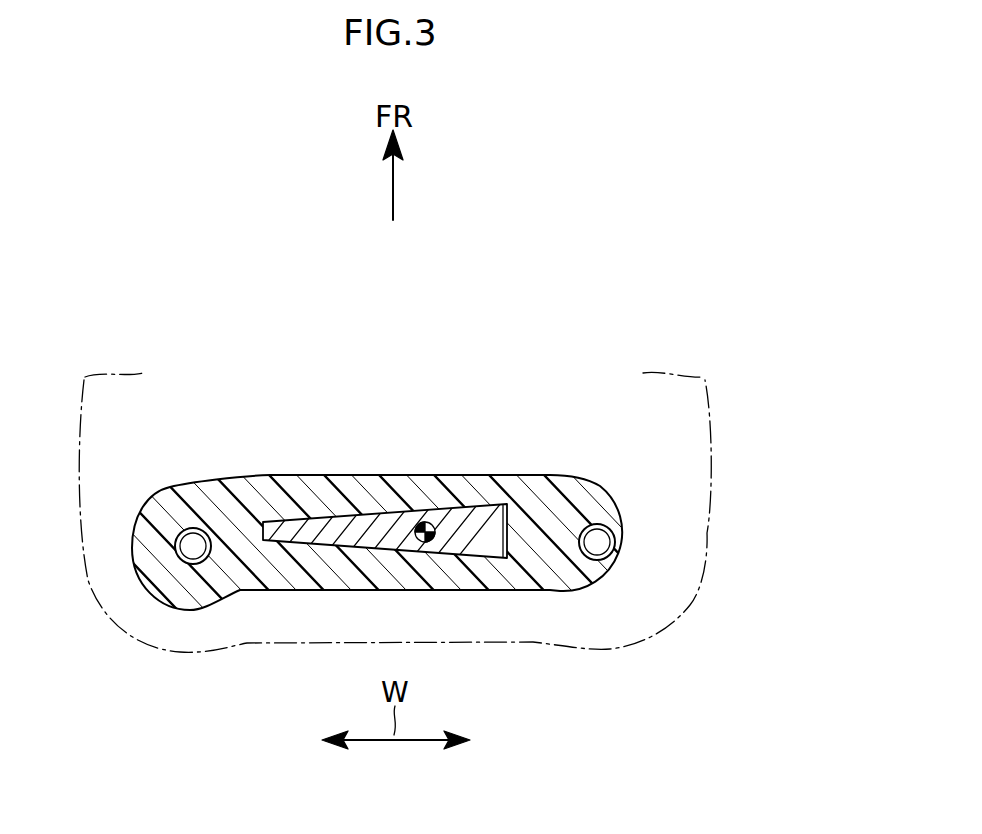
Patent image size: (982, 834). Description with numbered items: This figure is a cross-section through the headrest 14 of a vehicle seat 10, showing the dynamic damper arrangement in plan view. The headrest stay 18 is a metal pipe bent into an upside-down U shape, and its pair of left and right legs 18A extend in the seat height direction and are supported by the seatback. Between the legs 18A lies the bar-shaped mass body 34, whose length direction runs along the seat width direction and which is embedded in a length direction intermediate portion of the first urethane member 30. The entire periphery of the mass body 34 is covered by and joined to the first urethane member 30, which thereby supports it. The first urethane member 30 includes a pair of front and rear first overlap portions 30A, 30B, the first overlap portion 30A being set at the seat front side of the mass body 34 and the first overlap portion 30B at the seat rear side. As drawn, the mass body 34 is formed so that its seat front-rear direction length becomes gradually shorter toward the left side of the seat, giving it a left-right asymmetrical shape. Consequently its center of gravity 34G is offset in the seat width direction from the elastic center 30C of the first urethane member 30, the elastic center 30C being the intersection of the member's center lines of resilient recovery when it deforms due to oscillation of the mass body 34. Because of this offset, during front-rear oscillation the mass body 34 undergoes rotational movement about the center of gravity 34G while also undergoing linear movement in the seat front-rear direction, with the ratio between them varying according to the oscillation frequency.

The vehicle 10 is at (748, 270).
The headrest 14 is at (725, 503).
The headrest stay 18 is at (422, 491).
The legs 18A is at (192, 528).
The first urethane member 30 is at (453, 472).
The first overlap portion 30A is at (371, 480).
The first overlap portion 30B is at (360, 588).
The elastic center 30C is at (390, 526).
The mass body 34 is at (320, 514).
The center of gravity 34G is at (425, 542).